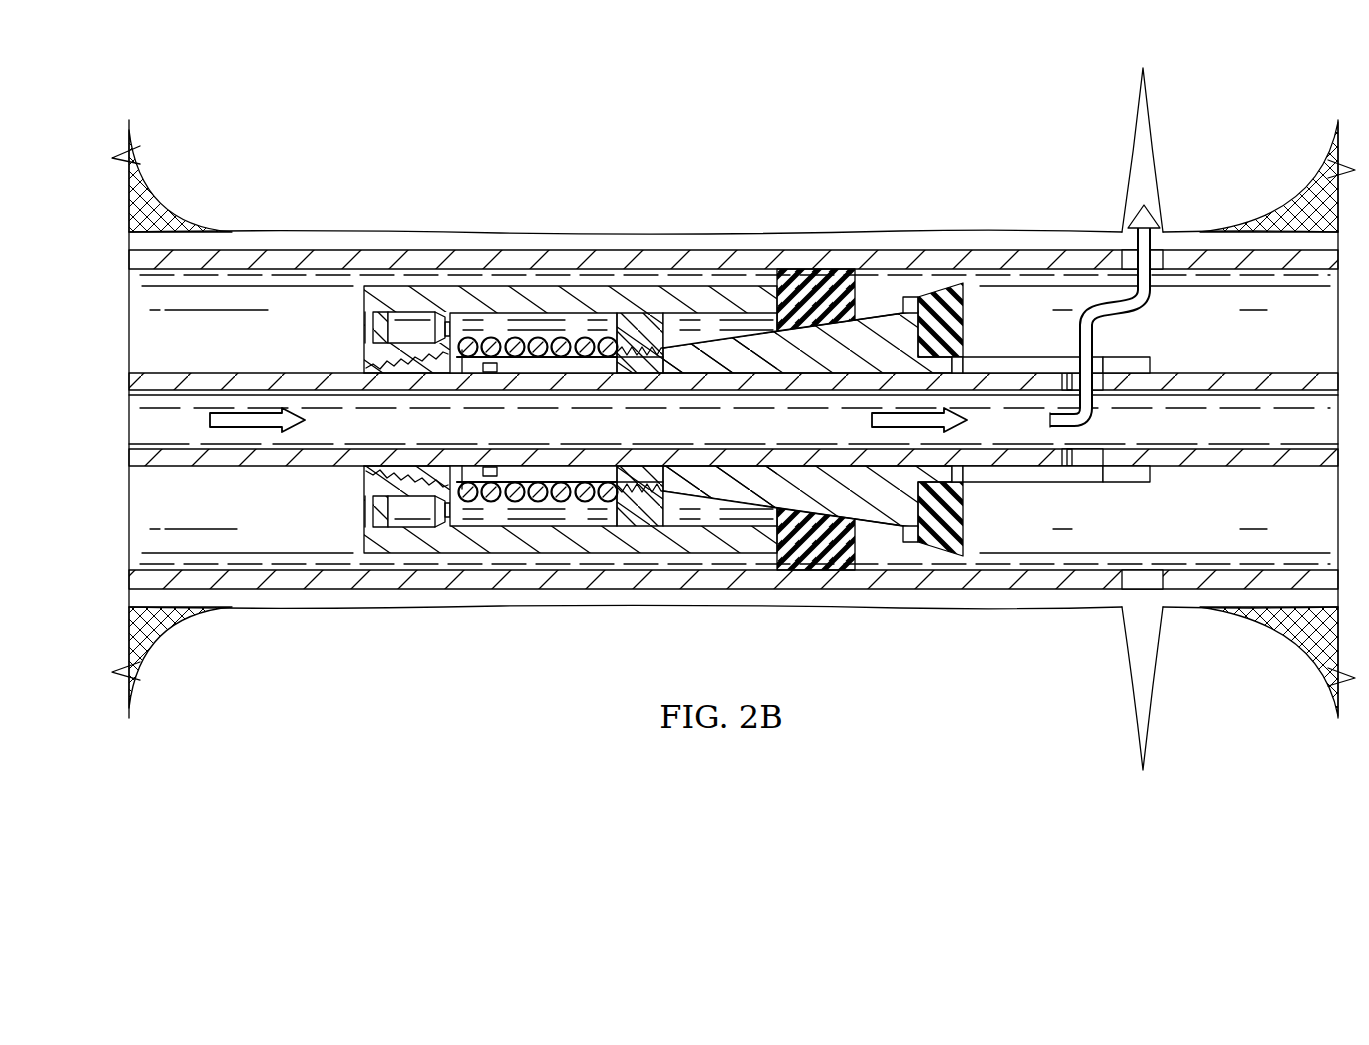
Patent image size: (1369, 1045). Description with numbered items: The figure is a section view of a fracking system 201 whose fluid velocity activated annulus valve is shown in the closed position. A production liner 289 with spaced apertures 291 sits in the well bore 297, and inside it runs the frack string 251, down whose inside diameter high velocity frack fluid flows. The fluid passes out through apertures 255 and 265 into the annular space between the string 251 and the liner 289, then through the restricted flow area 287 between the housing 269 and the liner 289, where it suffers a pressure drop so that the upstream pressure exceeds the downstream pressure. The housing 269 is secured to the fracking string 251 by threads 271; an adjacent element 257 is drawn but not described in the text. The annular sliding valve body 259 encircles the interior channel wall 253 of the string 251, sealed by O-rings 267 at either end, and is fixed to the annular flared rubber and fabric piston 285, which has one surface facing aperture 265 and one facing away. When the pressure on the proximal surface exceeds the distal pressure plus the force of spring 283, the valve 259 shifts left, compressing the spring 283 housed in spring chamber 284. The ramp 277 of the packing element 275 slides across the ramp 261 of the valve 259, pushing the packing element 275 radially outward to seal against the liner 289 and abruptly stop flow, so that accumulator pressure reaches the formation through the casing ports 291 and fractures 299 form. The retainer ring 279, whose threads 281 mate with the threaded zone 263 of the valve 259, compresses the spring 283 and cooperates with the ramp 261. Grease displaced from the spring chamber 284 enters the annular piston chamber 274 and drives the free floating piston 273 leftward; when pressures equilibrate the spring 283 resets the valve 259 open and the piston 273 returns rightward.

The downhole fracturing tool assembly 201 is at (498, 131).
The frack string 251 is at (1282, 373).
The interior channel wall 253 is at (233, 463).
The apertures 255 is at (1090, 452).
The mandrel 257 is at (406, 372).
The annular sliding valve body 259 is at (883, 313).
The ramp of valve 261 is at (713, 335).
The threaded zone 263 is at (650, 460).
The aperture 265 is at (1005, 365).
The O-rings 267 is at (478, 465).
The housing 269 is at (453, 292).
The threads of housing 271 is at (378, 357).
The piston 273 is at (375, 330).
The annular piston chamber 274 is at (418, 330).
The packing element 275 is at (820, 277).
The ramp of packing element 277 is at (822, 333).
The retainer ring 279 is at (638, 320).
The threads of retainer plate 281 is at (652, 356).
The spring 283 is at (570, 337).
The spring chamber 284 is at (503, 325).
The annular flared rubber and fabric piston 285 is at (950, 297).
The restricted flow area 287 is at (543, 279).
The production liner 289 is at (316, 250).
The spaced apertures 291 is at (1127, 262).
The well bore 297 is at (1013, 232).
The fractures 299 is at (1143, 185).